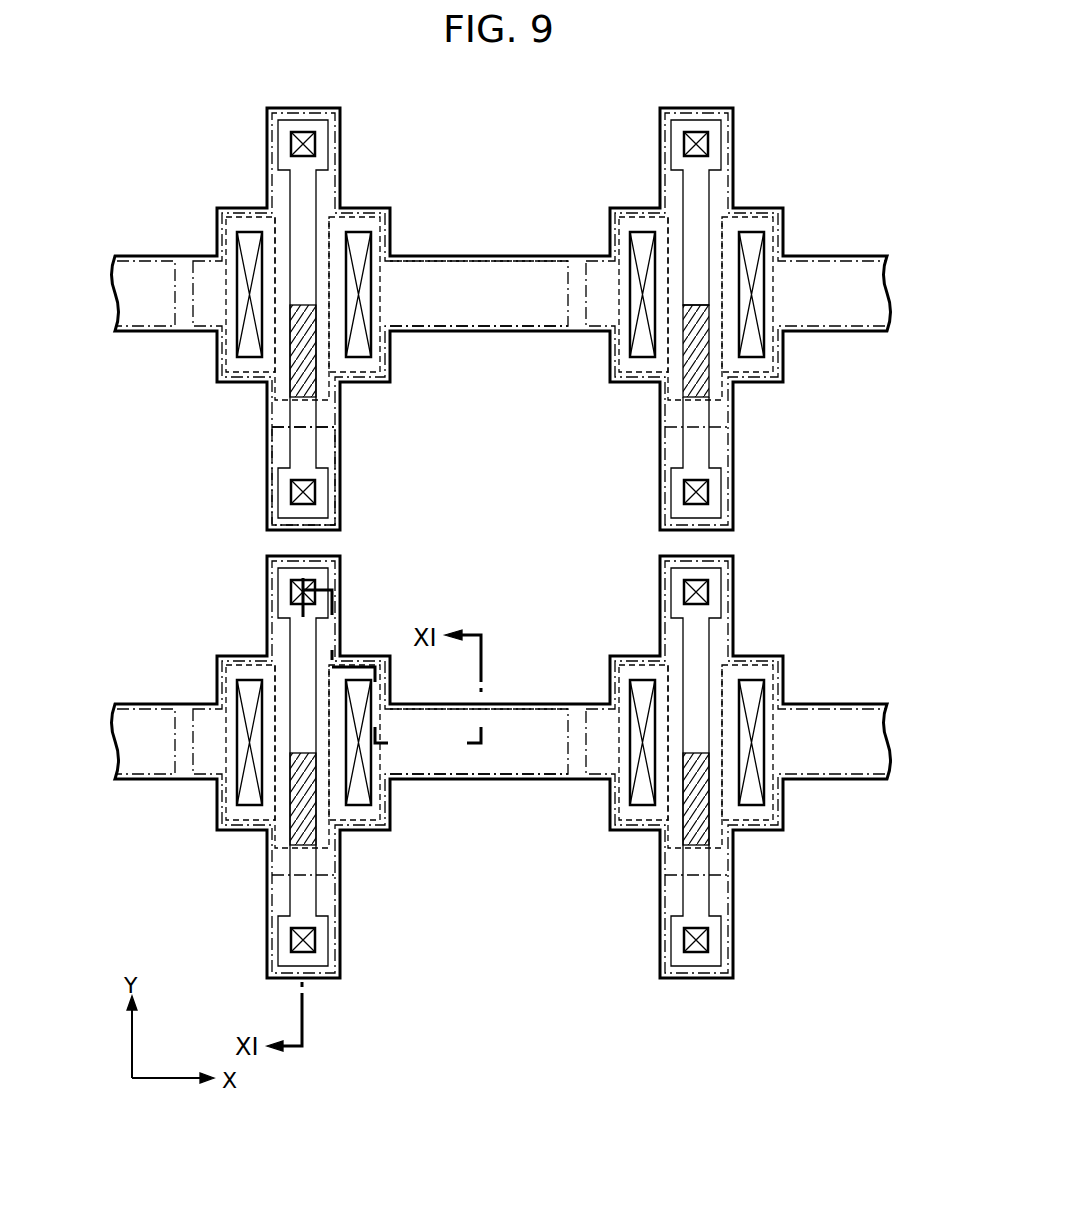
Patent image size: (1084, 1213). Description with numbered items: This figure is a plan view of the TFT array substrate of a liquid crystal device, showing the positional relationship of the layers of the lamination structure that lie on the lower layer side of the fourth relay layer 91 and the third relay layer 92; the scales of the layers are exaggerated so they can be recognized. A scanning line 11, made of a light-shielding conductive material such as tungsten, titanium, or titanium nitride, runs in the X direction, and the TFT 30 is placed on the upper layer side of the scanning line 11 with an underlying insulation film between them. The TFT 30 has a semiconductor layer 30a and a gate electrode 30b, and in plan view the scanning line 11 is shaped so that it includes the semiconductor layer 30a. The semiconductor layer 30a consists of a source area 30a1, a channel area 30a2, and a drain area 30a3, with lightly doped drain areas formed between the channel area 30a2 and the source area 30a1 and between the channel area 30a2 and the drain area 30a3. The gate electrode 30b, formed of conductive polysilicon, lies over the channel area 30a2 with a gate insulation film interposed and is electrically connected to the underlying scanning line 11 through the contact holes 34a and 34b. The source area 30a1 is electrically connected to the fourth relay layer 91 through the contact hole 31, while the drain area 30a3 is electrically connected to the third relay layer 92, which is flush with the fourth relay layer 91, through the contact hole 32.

The scanning line 11 is at (550, 256).
The TFT 30 is at (363, 319).
The semiconductor layer 30a is at (311, 191).
The gate electrode 30b is at (393, 222).
The source area 30a1 is at (700, 450).
The channel area 30a2 is at (688, 363).
The drain area 30a3 is at (698, 186).
The contact hole 31 is at (316, 492).
The contact hole 32 is at (316, 142).
The contact hole 34a is at (248, 235).
The contact hole 34b is at (365, 318).
The fourth relay layer 91 is at (270, 455).
The third relay layer 92 is at (217, 360).